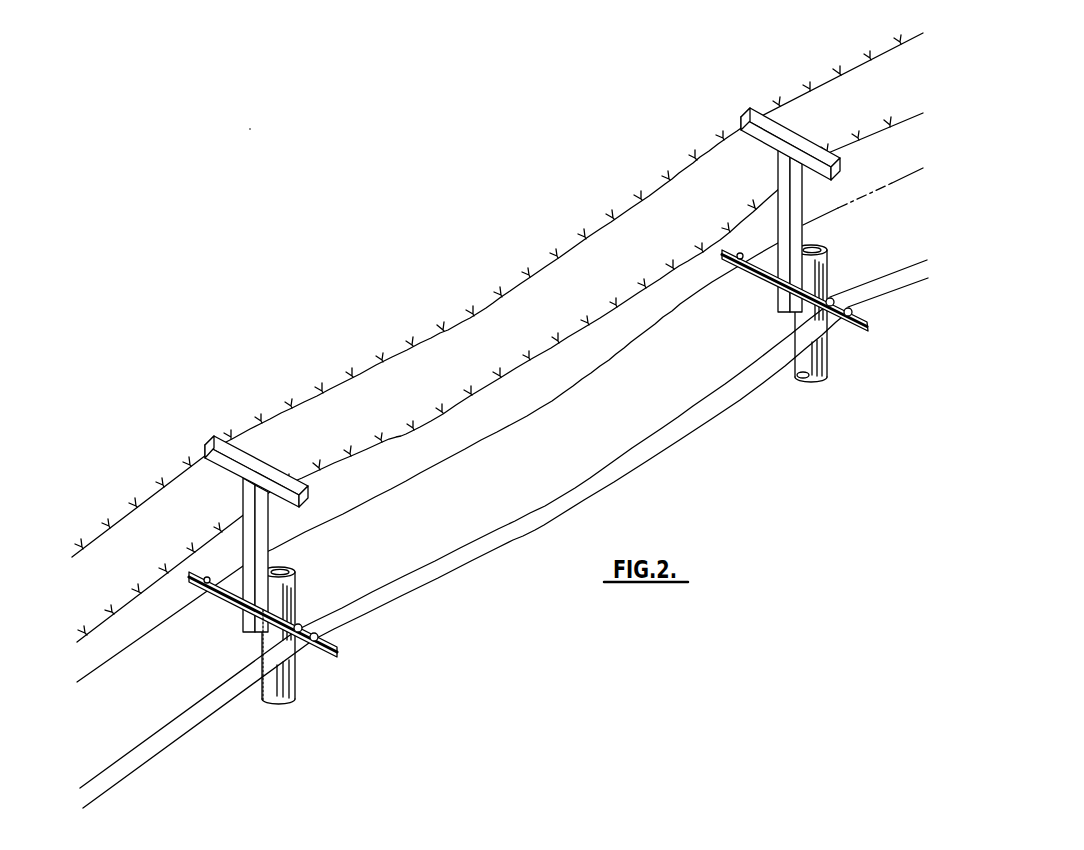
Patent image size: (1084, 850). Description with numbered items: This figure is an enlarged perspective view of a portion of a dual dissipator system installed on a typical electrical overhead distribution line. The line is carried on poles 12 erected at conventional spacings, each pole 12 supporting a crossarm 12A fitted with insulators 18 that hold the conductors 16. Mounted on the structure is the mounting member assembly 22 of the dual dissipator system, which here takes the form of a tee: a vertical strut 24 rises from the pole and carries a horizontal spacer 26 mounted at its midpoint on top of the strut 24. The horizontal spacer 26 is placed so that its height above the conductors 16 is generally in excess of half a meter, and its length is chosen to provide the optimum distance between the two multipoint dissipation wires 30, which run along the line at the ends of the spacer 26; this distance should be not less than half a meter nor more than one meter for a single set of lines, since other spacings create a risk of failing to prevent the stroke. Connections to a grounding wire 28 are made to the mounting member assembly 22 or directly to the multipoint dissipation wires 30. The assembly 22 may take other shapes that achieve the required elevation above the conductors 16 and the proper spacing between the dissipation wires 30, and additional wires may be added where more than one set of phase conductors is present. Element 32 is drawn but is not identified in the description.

The pole 12 is at (297, 627).
The crossarm 12A is at (246, 618).
The conductor 16 is at (548, 410).
The insulator 18 is at (316, 634).
The mounting member assembly 22 is at (238, 515).
The vertical strut 24 is at (247, 500).
The horizontal spacer 26 is at (253, 463).
The grounding wire 28 is at (288, 706).
The multipoint dissipation wire 30 is at (520, 284).
The barb 32 is at (655, 186).